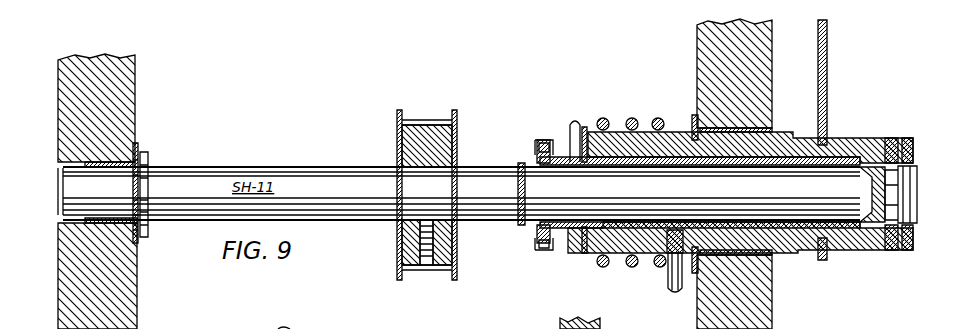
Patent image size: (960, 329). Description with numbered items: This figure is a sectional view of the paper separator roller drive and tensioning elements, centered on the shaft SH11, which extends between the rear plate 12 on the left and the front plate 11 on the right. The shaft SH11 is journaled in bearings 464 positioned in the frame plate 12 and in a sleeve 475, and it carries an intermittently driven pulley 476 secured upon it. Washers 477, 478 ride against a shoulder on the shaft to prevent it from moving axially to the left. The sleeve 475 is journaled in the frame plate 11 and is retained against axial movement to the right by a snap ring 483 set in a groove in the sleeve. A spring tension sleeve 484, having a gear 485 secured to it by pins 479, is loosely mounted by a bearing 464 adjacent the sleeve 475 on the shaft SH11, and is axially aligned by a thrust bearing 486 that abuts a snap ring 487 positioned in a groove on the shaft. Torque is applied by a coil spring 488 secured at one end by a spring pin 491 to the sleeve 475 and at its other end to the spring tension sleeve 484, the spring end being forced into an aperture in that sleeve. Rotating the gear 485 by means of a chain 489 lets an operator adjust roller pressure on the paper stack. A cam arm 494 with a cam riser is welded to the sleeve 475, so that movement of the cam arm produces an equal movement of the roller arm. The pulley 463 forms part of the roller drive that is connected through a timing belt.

The front plate 11 is at (700, 311).
The rear plate 12 is at (137, 304).
The pulley 463 is at (913, 196).
The bearings 464 is at (137, 244).
The sleeve 475 is at (868, 131).
The intermittently driven pulley 476 is at (427, 206).
The washer 477 is at (141, 152).
The washer 478 is at (136, 143).
The pins 479 is at (585, 255).
The snap ring 483 is at (694, 120).
The spring tension sleeve 484 is at (587, 128).
The gear 485 is at (537, 157).
The thrust bearing 486 is at (538, 245).
The snap ring 487 is at (519, 228).
The coil spring 488 is at (632, 122).
The chain 489 is at (537, 143).
The spring pin 491 is at (667, 284).
The cam arm 494 is at (827, 28).